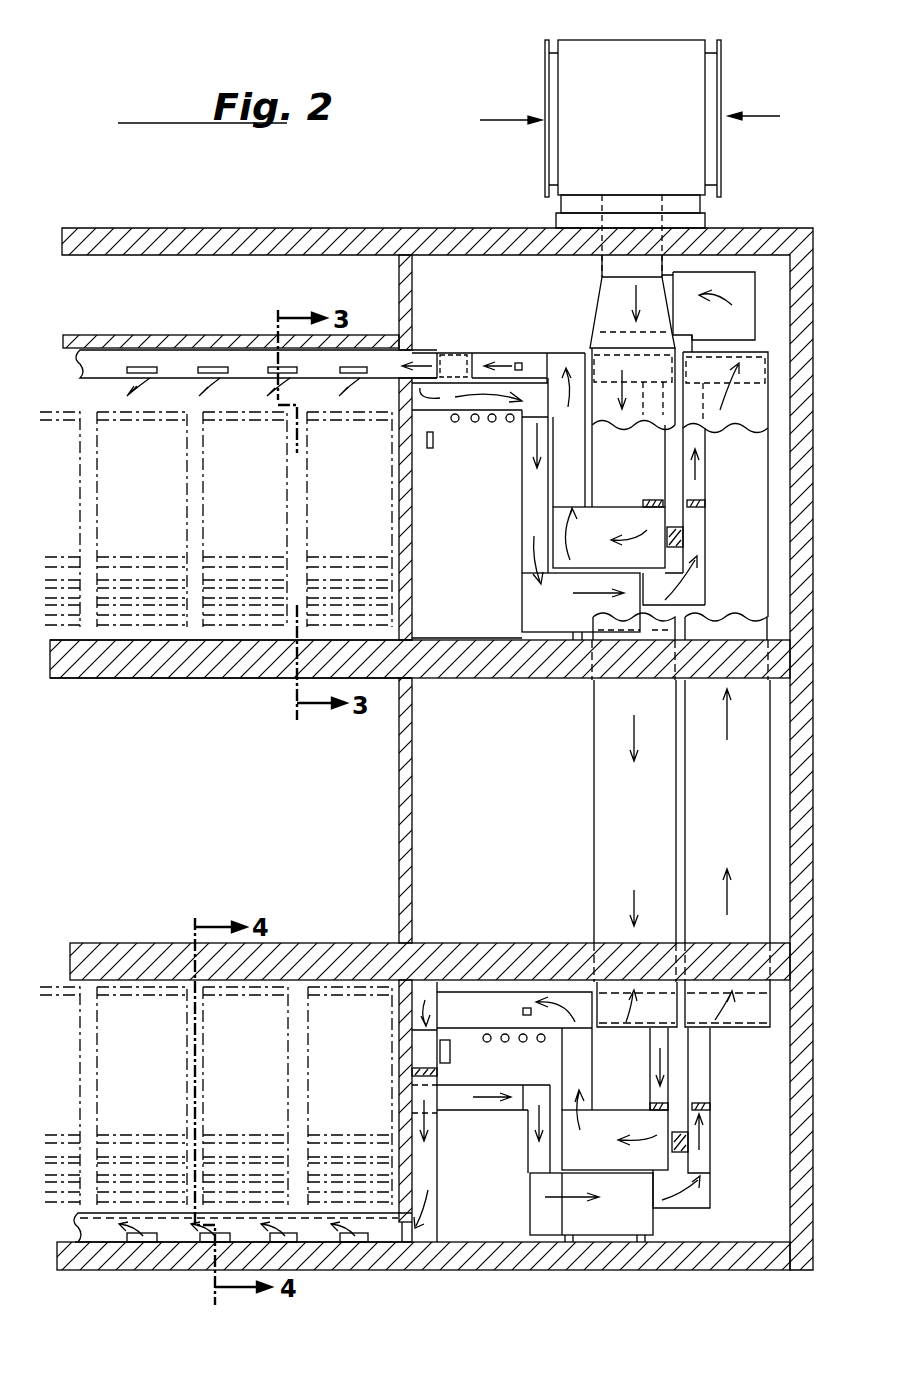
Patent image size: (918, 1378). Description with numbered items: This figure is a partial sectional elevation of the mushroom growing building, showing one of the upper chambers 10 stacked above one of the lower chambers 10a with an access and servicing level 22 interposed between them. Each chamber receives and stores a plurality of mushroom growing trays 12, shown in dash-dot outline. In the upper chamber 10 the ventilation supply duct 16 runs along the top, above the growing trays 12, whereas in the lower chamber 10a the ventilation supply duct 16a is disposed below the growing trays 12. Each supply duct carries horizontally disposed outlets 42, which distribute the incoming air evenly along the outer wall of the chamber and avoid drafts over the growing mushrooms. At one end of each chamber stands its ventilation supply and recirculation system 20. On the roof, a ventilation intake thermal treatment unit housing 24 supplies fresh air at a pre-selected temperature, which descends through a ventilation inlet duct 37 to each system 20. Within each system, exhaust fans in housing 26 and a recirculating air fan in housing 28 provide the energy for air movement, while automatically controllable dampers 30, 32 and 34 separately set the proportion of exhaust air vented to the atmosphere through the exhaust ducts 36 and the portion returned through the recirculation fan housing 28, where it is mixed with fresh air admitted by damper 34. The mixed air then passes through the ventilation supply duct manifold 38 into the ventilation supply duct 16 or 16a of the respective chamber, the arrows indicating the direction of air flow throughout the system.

The upper chambers 10 is at (96, 628).
The lower chambers 10a is at (88, 985).
The mushroom growing trays 12 is at (133, 560).
The ventilation supply ducts 16 is at (73, 378).
The ventilation supply ducts 16a is at (72, 1232).
The ventilation supply and recirculation system 20 is at (520, 501).
The access and servicing level 22 is at (400, 812).
The ventilation intake thermal treatment unit housing 24 is at (685, 83).
The exhaust fan housing 26 is at (540, 603).
The recirculating fan housing 28 is at (616, 522).
The automatically controllable damper 30 is at (685, 538).
The automatically controllable damper 32 is at (700, 500).
The fresh air damper 34 is at (645, 500).
The exhaust ducts 36 is at (742, 302).
The ventilation inlet ducts 37 is at (612, 307).
The ventilation supply duct manifolds 38 is at (483, 355).
The outlets 42 is at (210, 367).